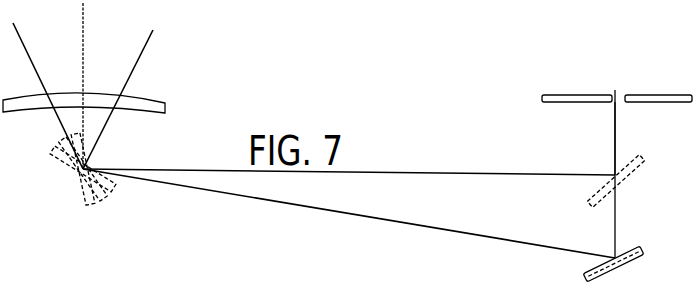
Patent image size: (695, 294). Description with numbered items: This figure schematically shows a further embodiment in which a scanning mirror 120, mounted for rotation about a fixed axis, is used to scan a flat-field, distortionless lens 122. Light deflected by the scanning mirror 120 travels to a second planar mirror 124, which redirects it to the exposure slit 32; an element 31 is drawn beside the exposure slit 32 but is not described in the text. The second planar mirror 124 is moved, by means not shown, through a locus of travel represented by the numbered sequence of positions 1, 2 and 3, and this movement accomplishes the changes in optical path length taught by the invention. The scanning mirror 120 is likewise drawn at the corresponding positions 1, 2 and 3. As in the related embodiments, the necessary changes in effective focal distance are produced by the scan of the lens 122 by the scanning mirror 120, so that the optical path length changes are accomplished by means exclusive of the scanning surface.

The flat-field, distortionless lens 122 is at (143, 103).
The scanning mirror 120 is at (81, 191).
The second planar mirror 124 is at (621, 268).
The slit 31 is at (667, 89).
The exposure slit 32 is at (612, 107).
The first position of numbered sequence 1 is at (346, 253).
The second position of numbered sequence 2 is at (379, 185).
The third position of numbered sequence 3 is at (375, 212).